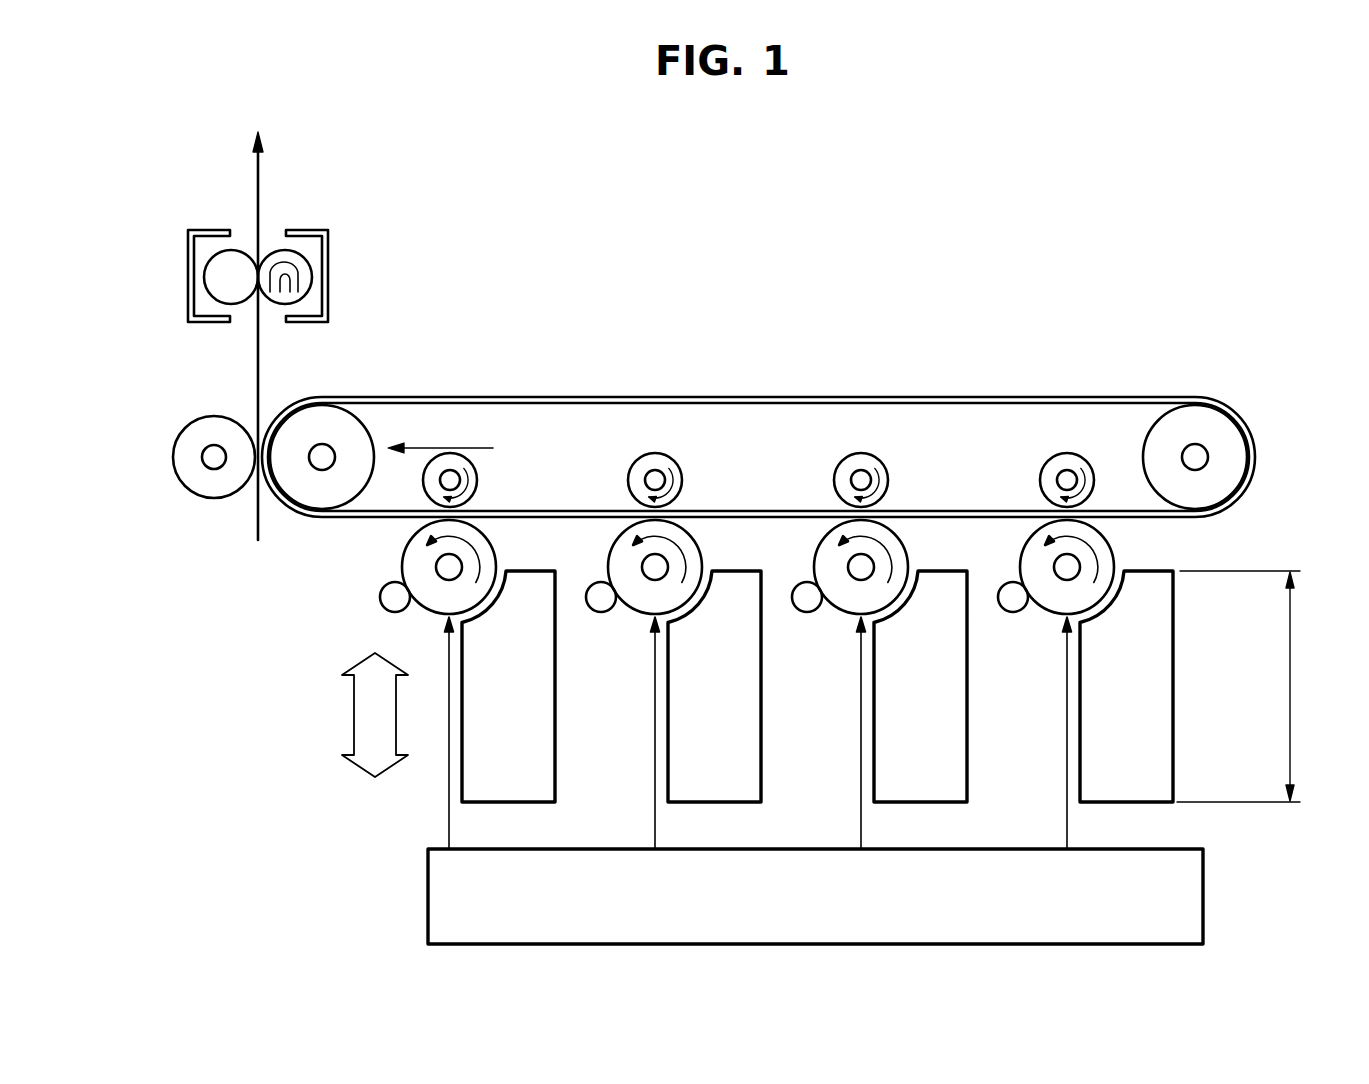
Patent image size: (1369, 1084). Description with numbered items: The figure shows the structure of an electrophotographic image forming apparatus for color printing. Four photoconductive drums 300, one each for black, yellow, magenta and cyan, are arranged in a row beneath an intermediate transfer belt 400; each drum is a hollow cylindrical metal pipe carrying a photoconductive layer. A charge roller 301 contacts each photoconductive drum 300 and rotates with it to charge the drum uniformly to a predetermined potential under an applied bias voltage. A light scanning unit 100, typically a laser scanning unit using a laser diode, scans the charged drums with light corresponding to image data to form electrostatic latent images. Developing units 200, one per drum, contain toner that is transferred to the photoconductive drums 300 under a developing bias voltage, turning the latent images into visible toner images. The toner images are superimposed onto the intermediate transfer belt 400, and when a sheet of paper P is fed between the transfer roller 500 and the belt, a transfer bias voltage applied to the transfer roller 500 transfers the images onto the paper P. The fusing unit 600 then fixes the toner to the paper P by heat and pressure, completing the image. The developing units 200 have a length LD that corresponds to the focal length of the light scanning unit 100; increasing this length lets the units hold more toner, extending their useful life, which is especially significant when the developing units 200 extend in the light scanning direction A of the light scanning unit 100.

The light scanning unit 100 is at (1203, 896).
The developing unit 200 is at (1125, 802).
The photoconductive drum 300 is at (1110, 540).
The charge roller 301 is at (1013, 612).
The intermediate transfer belt 400 is at (966, 397).
The transfer roller 500 is at (173, 458).
The fusing unit 600 is at (170, 287).
The sheet of paper P is at (256, 361).
The light scanning direction A is at (354, 713).
The length of the developing units LD is at (1255, 686).